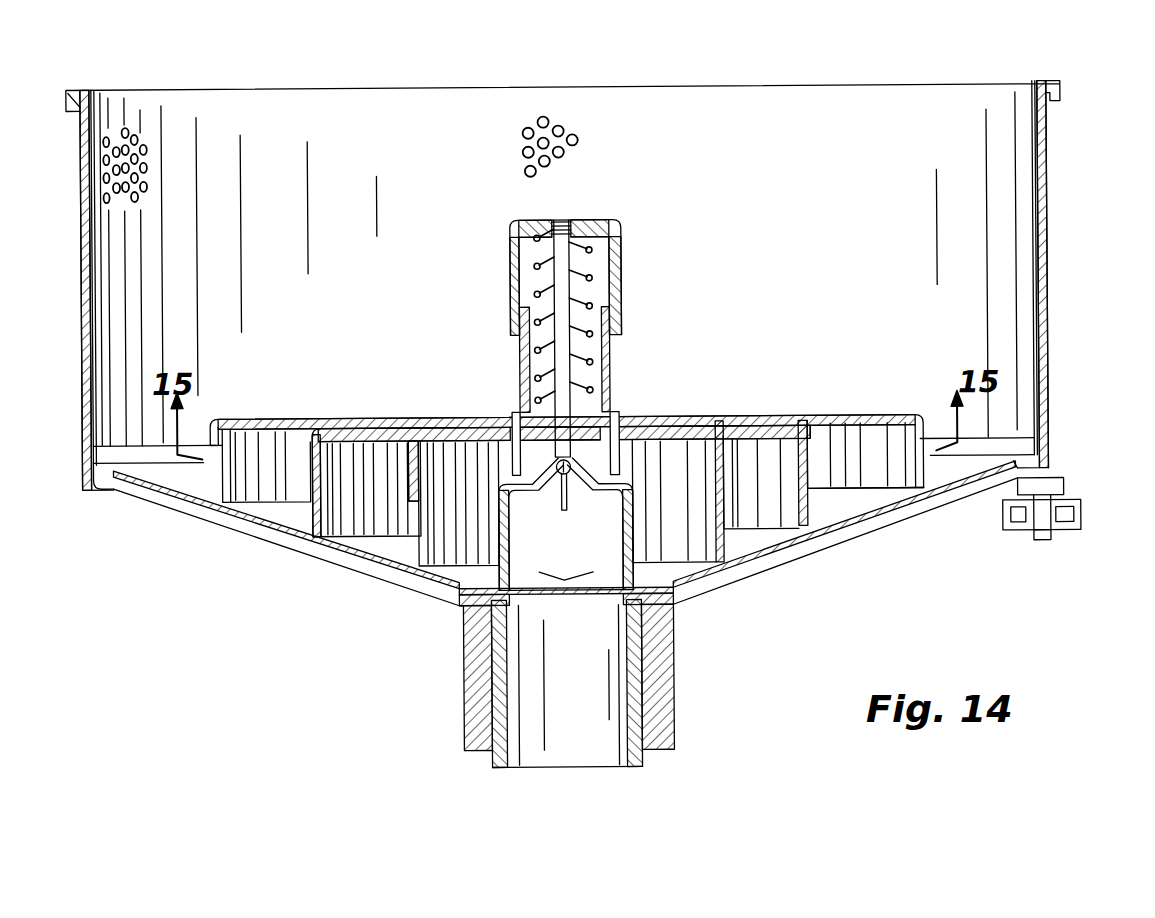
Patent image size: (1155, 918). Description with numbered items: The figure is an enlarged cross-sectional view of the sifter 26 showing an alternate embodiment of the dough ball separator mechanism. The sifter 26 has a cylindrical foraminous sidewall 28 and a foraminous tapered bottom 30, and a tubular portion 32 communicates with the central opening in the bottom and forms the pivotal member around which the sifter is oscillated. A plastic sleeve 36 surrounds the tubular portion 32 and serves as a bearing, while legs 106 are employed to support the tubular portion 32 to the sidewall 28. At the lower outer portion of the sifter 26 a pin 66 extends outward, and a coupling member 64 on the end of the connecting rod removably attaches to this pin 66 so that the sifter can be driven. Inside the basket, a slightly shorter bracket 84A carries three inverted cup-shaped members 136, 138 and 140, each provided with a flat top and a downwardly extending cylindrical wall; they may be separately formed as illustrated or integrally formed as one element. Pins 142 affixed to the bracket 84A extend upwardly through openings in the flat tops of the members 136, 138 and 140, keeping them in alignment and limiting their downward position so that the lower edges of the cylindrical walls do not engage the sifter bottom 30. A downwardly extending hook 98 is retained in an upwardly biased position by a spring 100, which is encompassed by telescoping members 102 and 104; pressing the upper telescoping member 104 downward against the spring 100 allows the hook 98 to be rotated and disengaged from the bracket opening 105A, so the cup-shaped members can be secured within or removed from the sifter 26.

The sifter 26 is at (1060, 88).
The cylindrical foraminous sidewall 28 is at (1049, 312).
The foraminous tapered bottom 30 is at (846, 533).
The tubular portion 32 is at (636, 688).
The plastic sleeve 36 is at (662, 648).
The coupling member 64 is at (1085, 525).
The pin 66 is at (1052, 545).
The bracket 84A is at (690, 584).
The hook 98 is at (548, 342).
The spring 100 is at (622, 278).
The telescoping member 102 is at (522, 378).
The telescoping member 104 is at (511, 275).
The cover plate 105A is at (660, 396).
The legs 106 is at (311, 557).
The inverted cup-shaped member 136 is at (722, 418).
The inverted cup-shaped member 138 is at (832, 418).
The inverted cup-shaped member 140 is at (895, 418).
The pins 142 is at (603, 455).